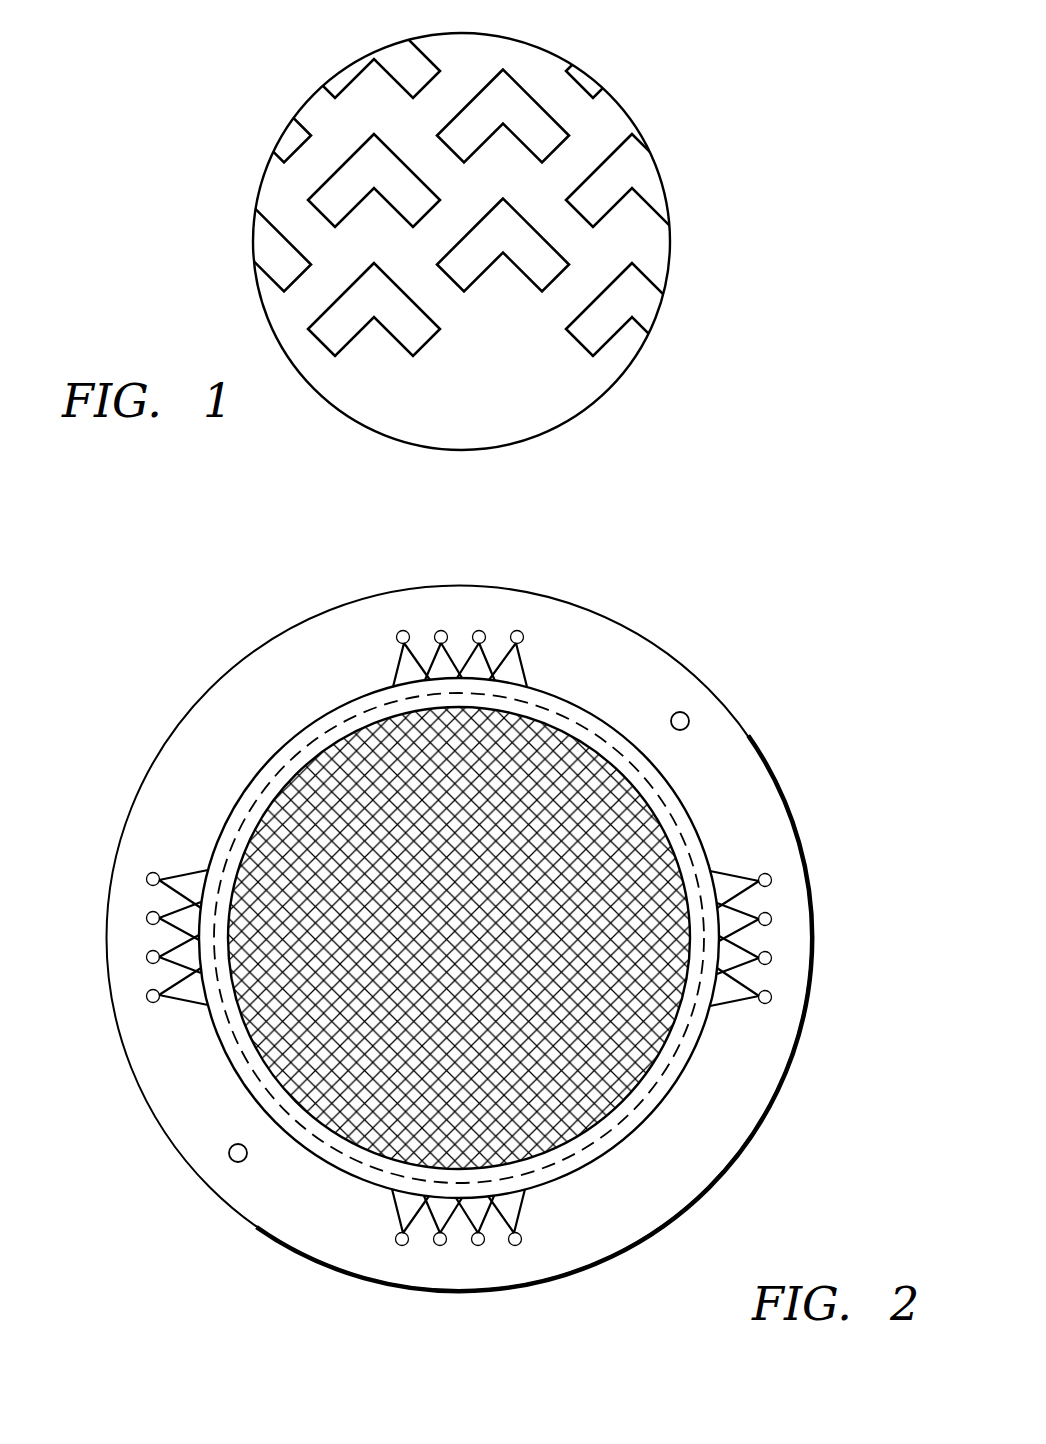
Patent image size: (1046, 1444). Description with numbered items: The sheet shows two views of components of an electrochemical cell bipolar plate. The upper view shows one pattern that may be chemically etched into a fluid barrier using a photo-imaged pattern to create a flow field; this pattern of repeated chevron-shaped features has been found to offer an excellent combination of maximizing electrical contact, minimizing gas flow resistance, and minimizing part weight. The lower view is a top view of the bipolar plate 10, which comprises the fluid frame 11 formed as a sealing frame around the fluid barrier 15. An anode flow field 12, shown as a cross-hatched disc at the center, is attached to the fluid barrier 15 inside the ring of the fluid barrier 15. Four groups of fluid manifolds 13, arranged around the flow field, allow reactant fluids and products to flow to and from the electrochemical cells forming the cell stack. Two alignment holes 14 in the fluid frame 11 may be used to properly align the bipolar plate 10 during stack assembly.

The bipolar plate 10 is at (800, 577).
The fluid frame 11 is at (796, 797).
The anode flow field 12 is at (476, 951).
The fluid manifolds 13 is at (515, 1246).
The alignment holes 14 is at (689, 716).
The fluid barrier 15 is at (283, 764).